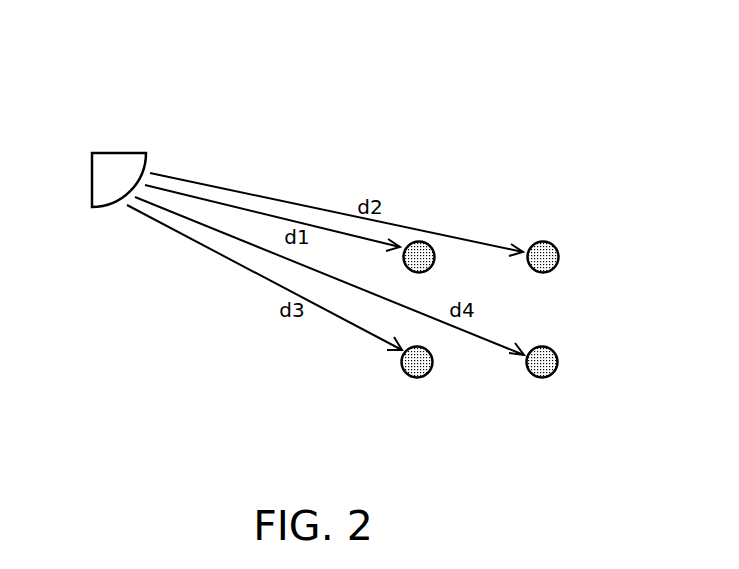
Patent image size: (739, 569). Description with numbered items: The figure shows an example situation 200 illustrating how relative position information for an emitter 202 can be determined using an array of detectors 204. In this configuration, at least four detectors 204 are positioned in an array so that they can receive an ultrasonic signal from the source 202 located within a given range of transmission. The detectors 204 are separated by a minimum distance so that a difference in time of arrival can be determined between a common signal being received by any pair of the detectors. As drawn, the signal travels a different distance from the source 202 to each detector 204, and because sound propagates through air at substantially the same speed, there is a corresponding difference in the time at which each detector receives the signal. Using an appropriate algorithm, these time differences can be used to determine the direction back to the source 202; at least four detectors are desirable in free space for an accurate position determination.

The example situation 200 is at (603, 161).
The emitter 202 is at (123, 152).
The detectors 204 is at (427, 377).